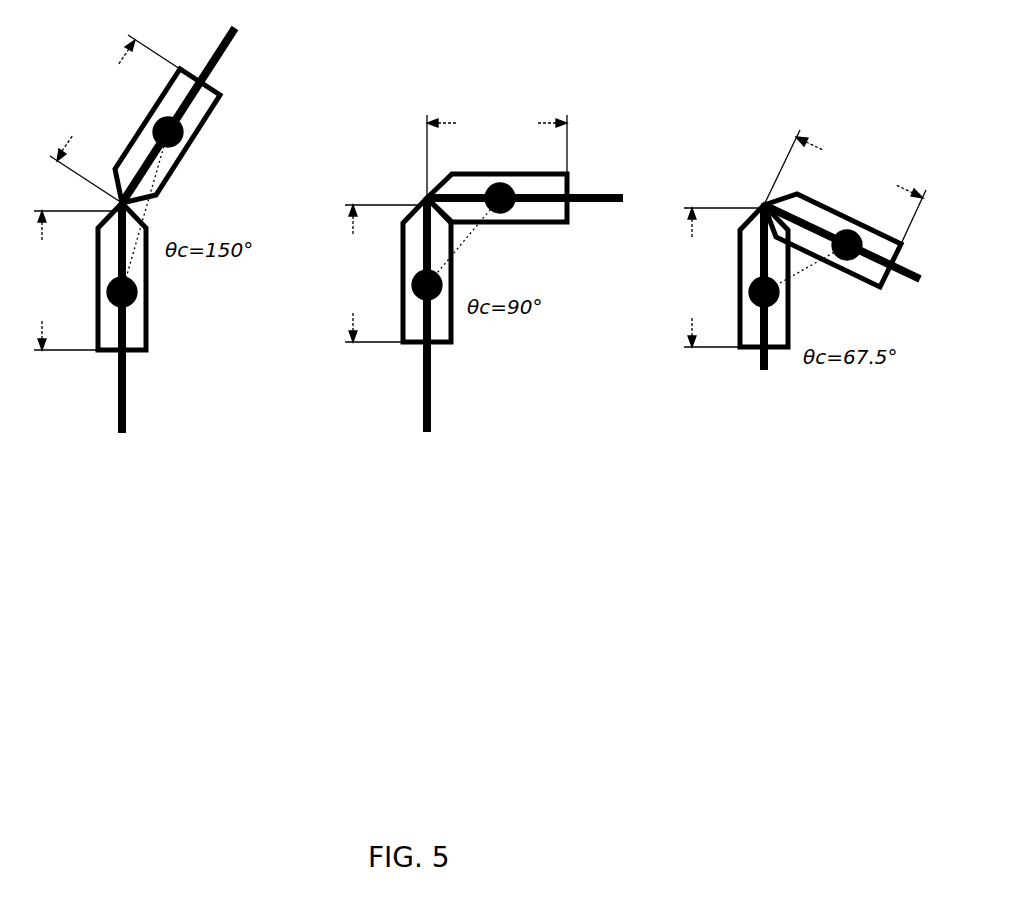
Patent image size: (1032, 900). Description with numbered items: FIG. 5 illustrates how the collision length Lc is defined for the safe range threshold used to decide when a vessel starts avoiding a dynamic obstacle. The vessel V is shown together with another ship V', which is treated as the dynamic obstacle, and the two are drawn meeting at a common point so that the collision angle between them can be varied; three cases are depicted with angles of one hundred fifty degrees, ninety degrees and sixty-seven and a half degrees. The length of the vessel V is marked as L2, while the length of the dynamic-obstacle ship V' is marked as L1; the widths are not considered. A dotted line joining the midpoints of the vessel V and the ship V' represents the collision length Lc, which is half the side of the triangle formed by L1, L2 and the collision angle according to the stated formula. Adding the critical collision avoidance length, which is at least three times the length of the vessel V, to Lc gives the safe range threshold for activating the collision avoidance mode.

The vessel V is at (443, 315).
The vessel as dynamic obstacle V' is at (517, 227).
The length of the vessel V' L1 is at (488, 139).
The length of vessel V L2 is at (397, 277).
The collision length Lc is at (484, 235).